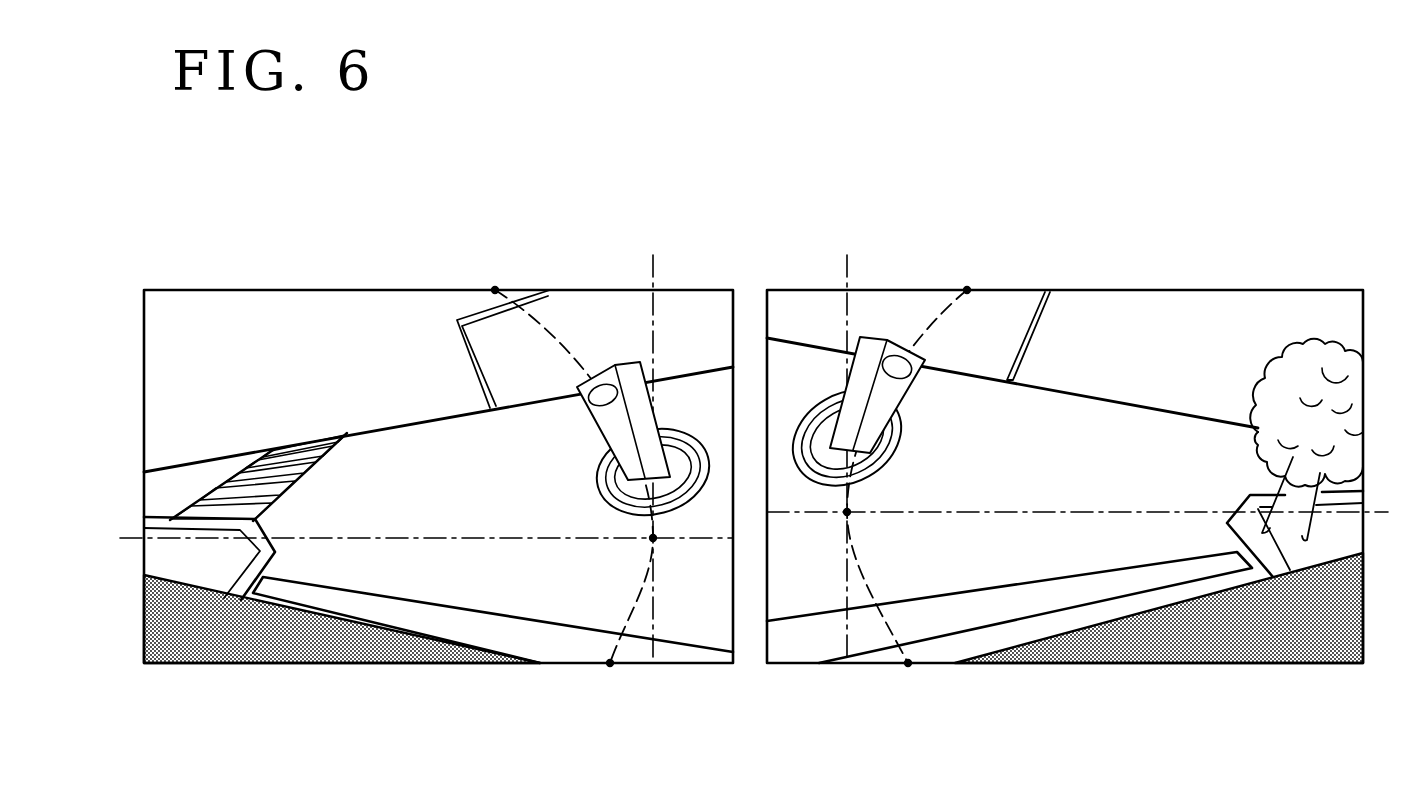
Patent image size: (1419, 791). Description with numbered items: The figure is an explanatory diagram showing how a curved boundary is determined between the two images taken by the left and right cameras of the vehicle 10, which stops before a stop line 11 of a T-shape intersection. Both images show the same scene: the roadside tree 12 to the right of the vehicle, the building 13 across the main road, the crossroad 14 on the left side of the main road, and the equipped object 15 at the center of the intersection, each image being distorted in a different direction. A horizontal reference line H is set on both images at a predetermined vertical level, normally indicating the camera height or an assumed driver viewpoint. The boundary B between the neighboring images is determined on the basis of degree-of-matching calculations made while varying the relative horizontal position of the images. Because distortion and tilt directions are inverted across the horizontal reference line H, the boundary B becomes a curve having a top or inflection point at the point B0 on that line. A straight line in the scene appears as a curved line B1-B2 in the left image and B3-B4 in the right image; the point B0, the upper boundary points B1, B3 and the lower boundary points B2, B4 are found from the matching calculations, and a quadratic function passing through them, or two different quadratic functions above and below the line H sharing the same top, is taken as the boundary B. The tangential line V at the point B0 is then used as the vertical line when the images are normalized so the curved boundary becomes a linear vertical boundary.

The vehicle 10 is at (315, 630).
The stop line 11 is at (432, 612).
The roadside tree 12 is at (1273, 447).
The building 13 is at (463, 355).
The crossroad 14 is at (287, 489).
The equipped object 15 is at (600, 428).
The boundary B is at (637, 607).
The point B0 is at (651, 540).
The upper boundary point B1 is at (495, 290).
The lower boundary point B2 is at (610, 663).
The upper boundary point B3 is at (967, 290).
The lower boundary point B4 is at (908, 663).
The tangential line V is at (751, 441).
The horizontal reference line H is at (753, 525).